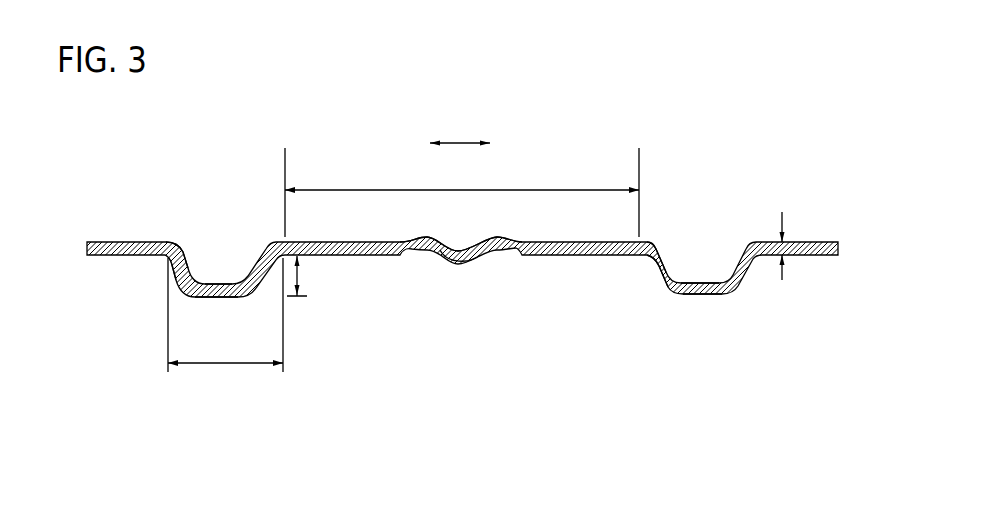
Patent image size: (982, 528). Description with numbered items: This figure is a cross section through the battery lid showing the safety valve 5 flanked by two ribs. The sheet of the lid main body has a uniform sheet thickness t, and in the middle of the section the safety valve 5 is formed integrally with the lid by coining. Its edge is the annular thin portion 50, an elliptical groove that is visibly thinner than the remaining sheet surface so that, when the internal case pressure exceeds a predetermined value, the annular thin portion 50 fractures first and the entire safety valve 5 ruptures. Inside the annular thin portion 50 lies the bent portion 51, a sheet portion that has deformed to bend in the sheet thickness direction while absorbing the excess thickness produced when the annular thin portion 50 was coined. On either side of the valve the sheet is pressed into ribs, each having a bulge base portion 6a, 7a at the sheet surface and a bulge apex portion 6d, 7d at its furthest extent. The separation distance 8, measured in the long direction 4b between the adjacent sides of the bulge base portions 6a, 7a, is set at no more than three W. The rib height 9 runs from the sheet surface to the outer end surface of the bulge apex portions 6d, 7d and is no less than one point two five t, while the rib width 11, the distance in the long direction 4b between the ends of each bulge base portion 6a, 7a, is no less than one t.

The safety valve 5 is at (467, 262).
The annular thin portion 50 is at (412, 240).
The bent portion 51 is at (462, 250).
The bulge base portion 7a is at (172, 272).
The bulge apex portion 7d is at (229, 300).
The bulge base portion 6a is at (656, 270).
The bulge apex portion 6d is at (698, 297).
The separation distance 8 is at (365, 187).
The long direction 4b is at (462, 142).
The rib height 9 is at (309, 278).
The rib width 11 is at (228, 366).
The sheet thickness t is at (785, 212).